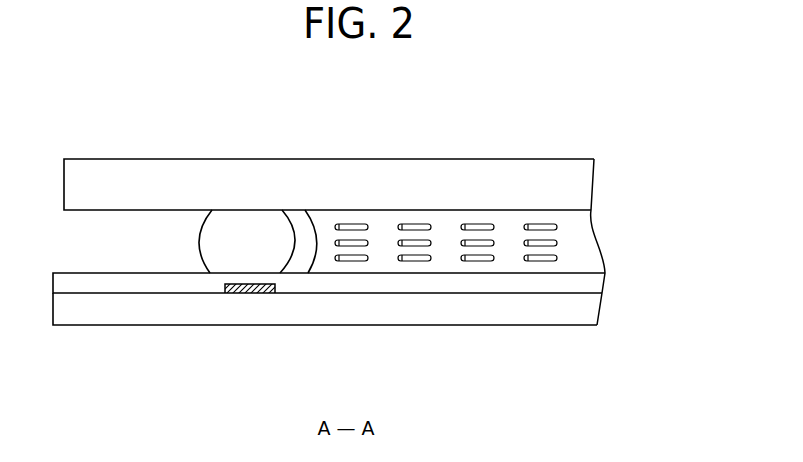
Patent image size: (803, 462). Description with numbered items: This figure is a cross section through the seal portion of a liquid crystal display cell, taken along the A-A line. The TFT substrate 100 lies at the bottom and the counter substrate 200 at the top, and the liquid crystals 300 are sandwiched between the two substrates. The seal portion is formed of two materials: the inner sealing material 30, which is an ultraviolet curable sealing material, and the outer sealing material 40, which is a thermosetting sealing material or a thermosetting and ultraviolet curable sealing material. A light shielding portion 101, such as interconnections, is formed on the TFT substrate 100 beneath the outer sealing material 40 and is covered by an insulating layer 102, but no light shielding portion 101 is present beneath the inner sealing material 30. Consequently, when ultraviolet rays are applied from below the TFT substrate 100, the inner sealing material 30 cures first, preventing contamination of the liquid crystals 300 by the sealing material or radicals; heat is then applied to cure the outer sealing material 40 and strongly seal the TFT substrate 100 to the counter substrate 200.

The counter substrate 200 is at (585, 185).
The TFT substrate 100 is at (585, 312).
The insulating layer 102 is at (585, 283).
The light shielding portion 101 is at (232, 294).
The outer sealing material 40 is at (251, 222).
The inner sealing material 30 is at (305, 230).
The liquid crystals 300 is at (451, 262).